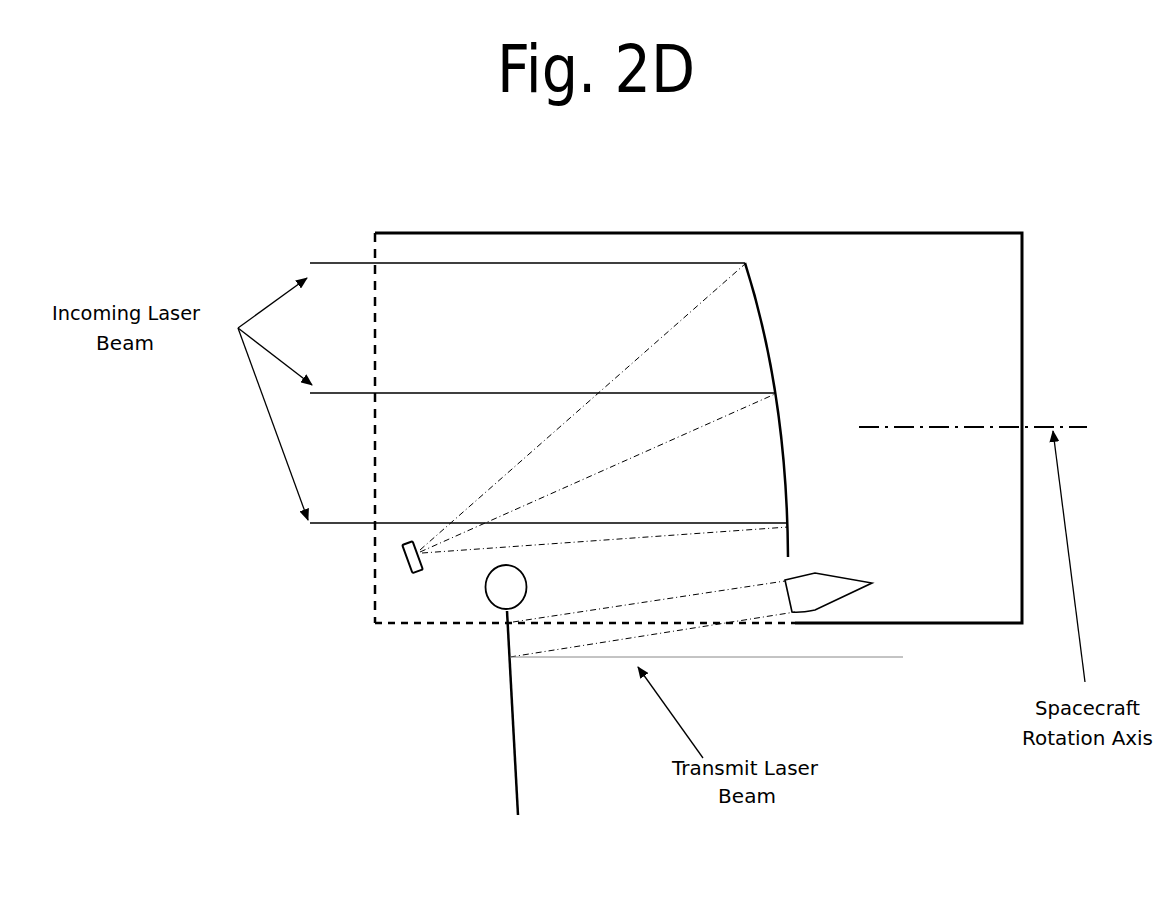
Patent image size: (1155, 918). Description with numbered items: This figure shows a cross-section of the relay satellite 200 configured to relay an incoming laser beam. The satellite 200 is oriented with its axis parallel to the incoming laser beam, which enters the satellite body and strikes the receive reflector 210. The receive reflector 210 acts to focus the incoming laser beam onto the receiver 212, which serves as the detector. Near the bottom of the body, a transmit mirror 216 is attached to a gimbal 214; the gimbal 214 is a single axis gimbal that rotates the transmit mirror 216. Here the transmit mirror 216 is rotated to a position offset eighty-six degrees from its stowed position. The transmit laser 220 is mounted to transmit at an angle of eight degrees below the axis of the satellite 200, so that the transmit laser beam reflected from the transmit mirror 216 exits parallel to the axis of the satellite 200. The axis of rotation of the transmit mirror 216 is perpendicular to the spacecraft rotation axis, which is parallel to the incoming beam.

The relay satellite 200 is at (655, 232).
The receive reflector 210 is at (765, 310).
The receiver 212 is at (399, 561).
The gimbal 214 is at (493, 613).
The transmit mirror 216 is at (513, 797).
The transmit laser 220 is at (815, 614).